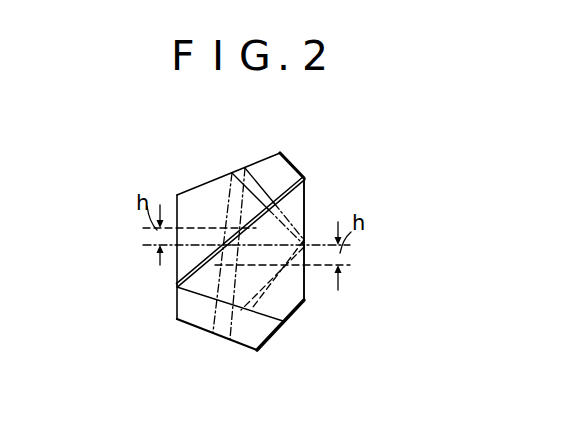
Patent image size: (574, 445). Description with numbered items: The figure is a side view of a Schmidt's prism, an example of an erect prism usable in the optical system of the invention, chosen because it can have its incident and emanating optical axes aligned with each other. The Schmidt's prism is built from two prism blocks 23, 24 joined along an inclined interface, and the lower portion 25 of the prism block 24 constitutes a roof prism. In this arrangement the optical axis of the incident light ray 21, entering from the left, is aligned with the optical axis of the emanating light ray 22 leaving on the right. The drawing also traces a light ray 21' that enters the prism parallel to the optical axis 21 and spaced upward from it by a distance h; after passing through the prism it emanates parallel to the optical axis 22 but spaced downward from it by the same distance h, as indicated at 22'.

The incident light ray 21 is at (156, 248).
The light ray 21' is at (168, 223).
The emanating light ray 22 is at (320, 244).
The emanating light ray 22' is at (315, 269).
The prism block 23 is at (273, 168).
The prism block 24 is at (296, 297).
The lower portion 25 is at (206, 335).